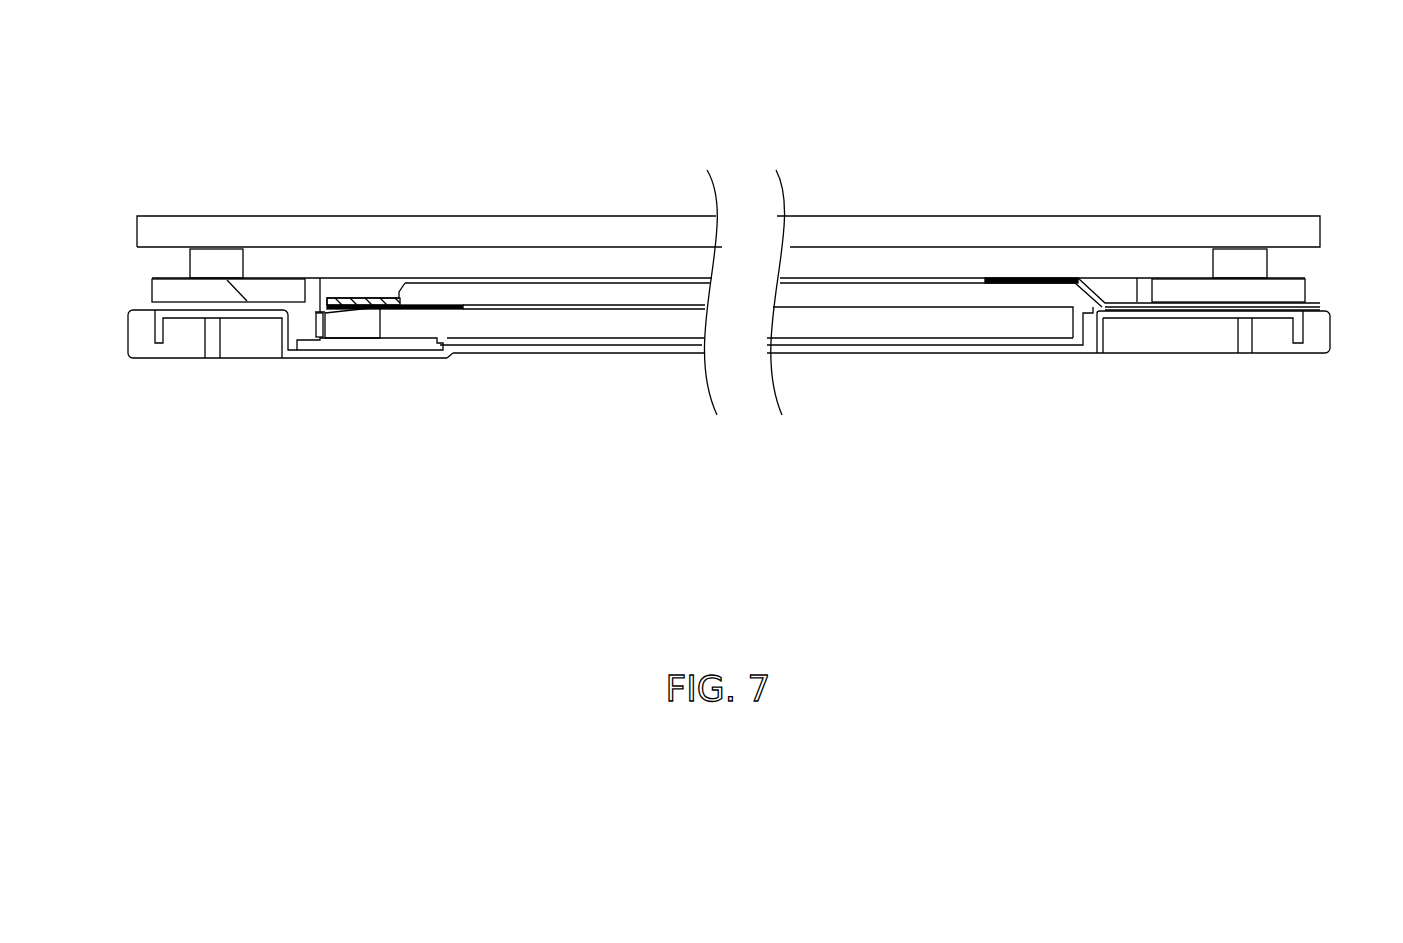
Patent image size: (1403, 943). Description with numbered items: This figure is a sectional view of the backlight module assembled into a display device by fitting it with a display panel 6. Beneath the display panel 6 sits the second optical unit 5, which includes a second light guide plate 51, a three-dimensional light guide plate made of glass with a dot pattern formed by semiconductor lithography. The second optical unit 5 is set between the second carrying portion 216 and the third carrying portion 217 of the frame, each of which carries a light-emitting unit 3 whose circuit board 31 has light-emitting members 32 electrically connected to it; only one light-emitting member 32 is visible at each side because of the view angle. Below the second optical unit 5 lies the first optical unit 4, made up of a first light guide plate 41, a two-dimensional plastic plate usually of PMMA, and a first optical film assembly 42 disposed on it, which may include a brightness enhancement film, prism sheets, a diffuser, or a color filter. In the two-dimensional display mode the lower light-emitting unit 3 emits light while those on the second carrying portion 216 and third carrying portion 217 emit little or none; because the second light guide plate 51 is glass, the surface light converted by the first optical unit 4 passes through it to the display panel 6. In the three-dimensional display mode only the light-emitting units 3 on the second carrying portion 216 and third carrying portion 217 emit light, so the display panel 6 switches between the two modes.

The light-emitting unit 3 is at (721, 302).
The circuit board 31 is at (155, 294).
The light-emitting member 32 is at (193, 269).
The first optical unit 4 is at (826, 388).
The first light guide plate 41 is at (585, 322).
The first optical film assembly 42 is at (658, 298).
The second optical unit 5 is at (728, 160).
The second light guide plate 51 is at (485, 267).
The display panel 6 is at (1053, 215).
The second carrying portion 216 is at (198, 317).
The third carrying portion 217 is at (1190, 318).